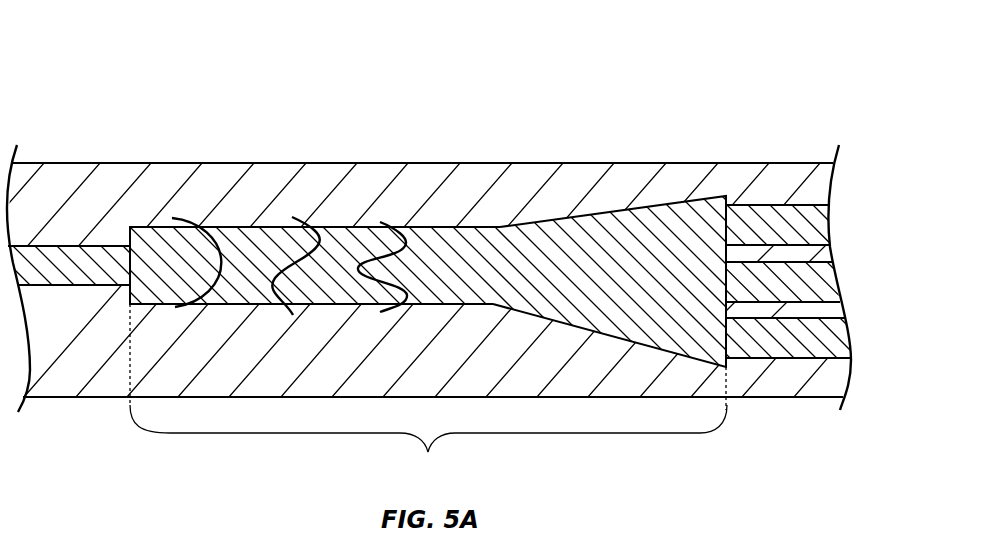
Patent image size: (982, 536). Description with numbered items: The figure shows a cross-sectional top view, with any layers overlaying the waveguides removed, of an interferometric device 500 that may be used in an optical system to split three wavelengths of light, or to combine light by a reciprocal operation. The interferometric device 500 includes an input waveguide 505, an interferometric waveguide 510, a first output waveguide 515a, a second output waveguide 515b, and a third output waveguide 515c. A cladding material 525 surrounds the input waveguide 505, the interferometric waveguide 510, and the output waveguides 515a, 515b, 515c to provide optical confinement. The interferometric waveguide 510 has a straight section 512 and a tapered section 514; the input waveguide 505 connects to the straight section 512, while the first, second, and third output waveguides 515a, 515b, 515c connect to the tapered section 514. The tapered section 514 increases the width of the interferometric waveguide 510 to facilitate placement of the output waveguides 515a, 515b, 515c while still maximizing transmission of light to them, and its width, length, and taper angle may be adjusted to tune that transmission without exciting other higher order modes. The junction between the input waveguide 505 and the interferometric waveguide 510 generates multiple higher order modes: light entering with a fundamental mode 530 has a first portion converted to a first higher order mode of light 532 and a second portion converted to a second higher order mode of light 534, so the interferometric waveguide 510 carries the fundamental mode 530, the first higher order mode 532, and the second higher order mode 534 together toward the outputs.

The interferometric device 500 is at (53, 49).
The input waveguide 505 is at (60, 246).
The interferometric waveguide 510 is at (428, 351).
The straight section 512 is at (472, 226).
The tapered section 514 is at (640, 208).
The cladding material 525 is at (540, 176).
The fundamental mode of light 530 is at (192, 222).
The first higher order mode of light 532 is at (305, 218).
The second higher order mode of light 534 is at (393, 222).
The first output waveguide 515a is at (831, 222).
The second output waveguide 515b is at (845, 276).
The third output waveguide 515c is at (852, 334).